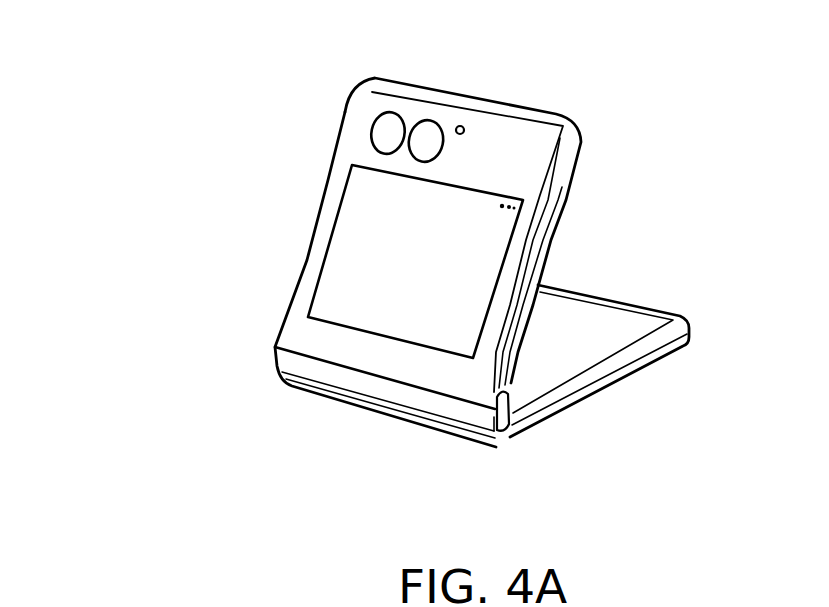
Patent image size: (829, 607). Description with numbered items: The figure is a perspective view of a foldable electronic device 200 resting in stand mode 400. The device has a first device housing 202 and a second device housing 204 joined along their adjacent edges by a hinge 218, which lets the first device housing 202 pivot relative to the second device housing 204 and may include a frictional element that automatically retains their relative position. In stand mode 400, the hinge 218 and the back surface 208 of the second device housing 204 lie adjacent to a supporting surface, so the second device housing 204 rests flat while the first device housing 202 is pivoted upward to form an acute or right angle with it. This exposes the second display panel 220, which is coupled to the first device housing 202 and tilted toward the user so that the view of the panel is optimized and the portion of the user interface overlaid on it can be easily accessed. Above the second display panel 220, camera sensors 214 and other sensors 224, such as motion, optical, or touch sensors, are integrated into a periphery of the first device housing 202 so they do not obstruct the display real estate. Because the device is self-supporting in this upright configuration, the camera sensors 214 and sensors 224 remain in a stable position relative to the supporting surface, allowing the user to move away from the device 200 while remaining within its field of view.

The stand mode 400 is at (141, 78).
The foldable electronic device 200 is at (330, 107).
The first device housing 202 is at (308, 278).
The second device housing 204 is at (623, 370).
The back surface 208 is at (547, 420).
The camera sensors 214 is at (391, 125).
The hinge 218 is at (512, 437).
The second display panel 220 is at (433, 276).
The sensors 224 is at (464, 125).